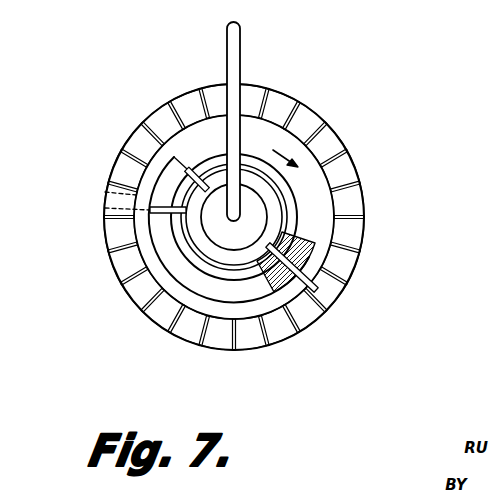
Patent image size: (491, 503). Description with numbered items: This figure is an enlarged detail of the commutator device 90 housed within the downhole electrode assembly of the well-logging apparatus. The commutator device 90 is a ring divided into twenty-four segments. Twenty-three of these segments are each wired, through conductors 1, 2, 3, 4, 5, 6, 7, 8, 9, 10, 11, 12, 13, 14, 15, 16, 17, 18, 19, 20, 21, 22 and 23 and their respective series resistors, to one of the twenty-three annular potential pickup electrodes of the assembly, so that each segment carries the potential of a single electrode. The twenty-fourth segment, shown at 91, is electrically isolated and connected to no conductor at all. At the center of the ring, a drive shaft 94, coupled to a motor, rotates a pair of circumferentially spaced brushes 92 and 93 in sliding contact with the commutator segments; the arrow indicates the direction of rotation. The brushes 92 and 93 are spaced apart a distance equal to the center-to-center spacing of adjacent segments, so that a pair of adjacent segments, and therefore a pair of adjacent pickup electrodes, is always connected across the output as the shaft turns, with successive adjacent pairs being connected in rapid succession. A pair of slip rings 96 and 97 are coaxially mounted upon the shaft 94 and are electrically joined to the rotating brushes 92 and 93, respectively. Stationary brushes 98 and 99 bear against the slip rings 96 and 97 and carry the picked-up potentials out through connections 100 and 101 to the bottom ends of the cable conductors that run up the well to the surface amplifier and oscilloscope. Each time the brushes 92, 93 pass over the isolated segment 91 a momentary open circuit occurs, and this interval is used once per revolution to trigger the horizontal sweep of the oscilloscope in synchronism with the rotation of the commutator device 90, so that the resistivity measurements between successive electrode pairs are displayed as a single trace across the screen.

The conductor 1 is at (114, 166).
The conductor 2 is at (131, 136).
The conductor 3 is at (155, 111).
The conductor 4 is at (184, 94).
The conductor 5 is at (217, 85).
The conductor 6 is at (251, 85).
The conductor 7 is at (284, 94).
The conductor 8 is at (313, 111).
The conductor 9 is at (337, 136).
The conductor 10 is at (354, 166).
The conductor 11 is at (363, 200).
The conductor 12 is at (363, 234).
The conductor 13 is at (354, 268).
The conductor 14 is at (337, 298).
The conductor 15 is at (313, 323).
The conductor 16 is at (284, 340).
The conductor 17 is at (251, 349).
The conductor 18 is at (217, 349).
The conductor 19 is at (184, 340).
The conductor 20 is at (155, 323).
The conductor 21 is at (131, 298).
The conductor 22 is at (114, 268).
The conductor 23 is at (105, 234).
The commutator device 90 is at (371, 220).
The commutator segment 91 is at (110, 202).
The brush 92 is at (279, 292).
The brush 93 is at (303, 262).
The drive shaft 94 is at (239, 30).
The slip ring 96 is at (188, 238).
The slip ring 97 is at (209, 236).
The stationary brush 98 is at (158, 214).
The stationary brush 99 is at (190, 166).
The connection 100 is at (108, 187).
The connection 101 is at (106, 216).